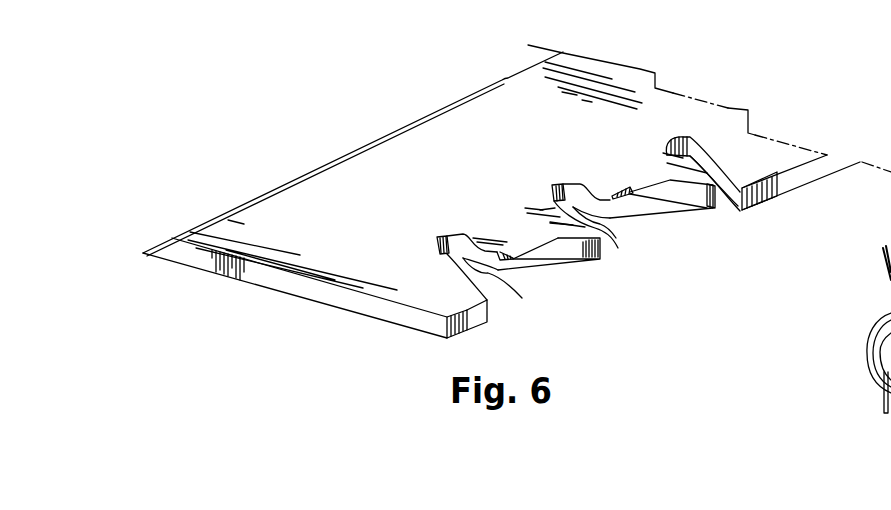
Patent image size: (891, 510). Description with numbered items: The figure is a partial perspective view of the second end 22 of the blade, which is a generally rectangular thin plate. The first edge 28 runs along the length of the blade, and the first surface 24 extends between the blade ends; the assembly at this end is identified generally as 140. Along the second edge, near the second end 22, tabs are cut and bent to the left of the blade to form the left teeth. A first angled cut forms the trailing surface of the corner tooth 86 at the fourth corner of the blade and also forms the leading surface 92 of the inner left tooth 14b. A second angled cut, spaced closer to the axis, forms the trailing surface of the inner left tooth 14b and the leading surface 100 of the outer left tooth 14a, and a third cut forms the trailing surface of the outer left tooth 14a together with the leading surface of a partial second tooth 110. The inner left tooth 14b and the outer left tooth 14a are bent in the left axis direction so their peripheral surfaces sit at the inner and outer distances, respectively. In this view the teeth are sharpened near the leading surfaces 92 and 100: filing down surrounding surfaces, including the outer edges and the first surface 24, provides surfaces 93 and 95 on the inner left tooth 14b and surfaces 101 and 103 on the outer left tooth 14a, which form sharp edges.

The fastening assembly 140 is at (393, 101).
The first edge 28 is at (257, 199).
The second end 22 is at (331, 295).
The first surface 24 is at (528, 110).
The corner tooth 86 is at (450, 296).
The leading surface 92 is at (487, 260).
The surface 93 is at (567, 248).
The surface 95 is at (522, 240).
The inner left tooth 14b is at (631, 219).
The leading surface 100 is at (610, 215).
The surface 101 is at (693, 205).
The surface 103 is at (630, 180).
The outer left tooth 14a is at (763, 194).
The partial second tooth 110 is at (747, 168).